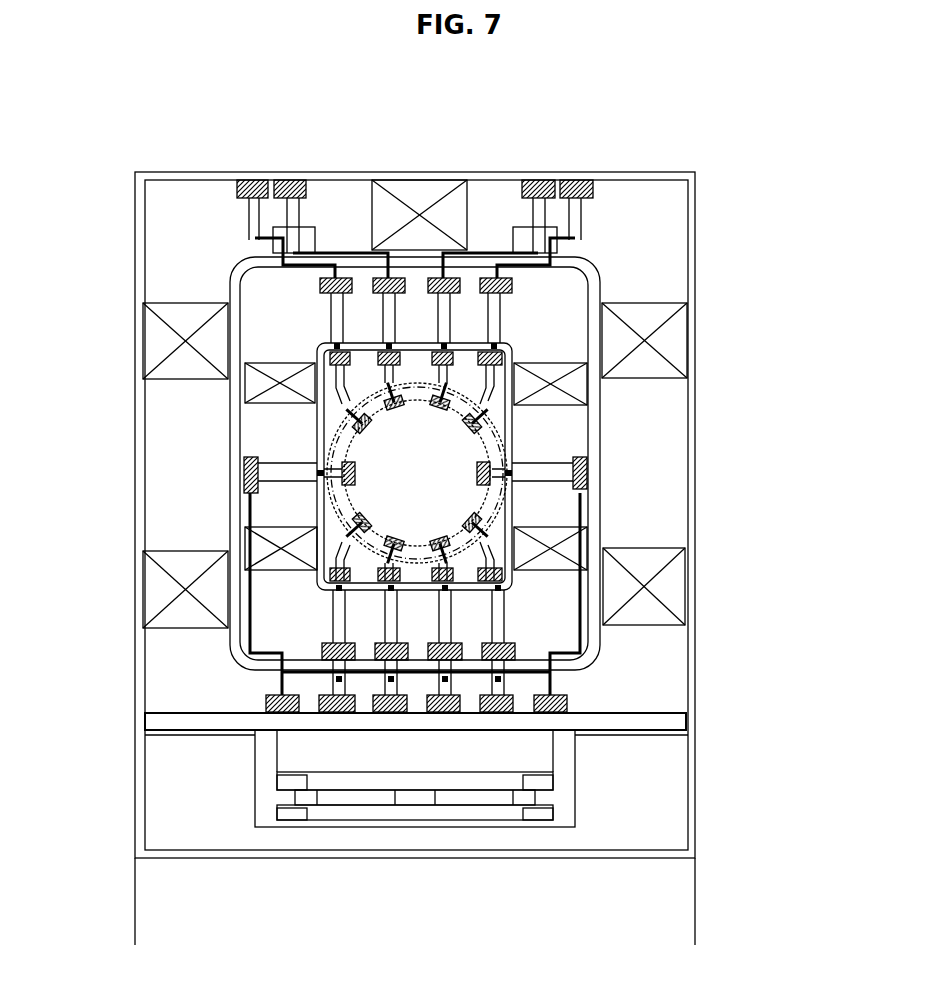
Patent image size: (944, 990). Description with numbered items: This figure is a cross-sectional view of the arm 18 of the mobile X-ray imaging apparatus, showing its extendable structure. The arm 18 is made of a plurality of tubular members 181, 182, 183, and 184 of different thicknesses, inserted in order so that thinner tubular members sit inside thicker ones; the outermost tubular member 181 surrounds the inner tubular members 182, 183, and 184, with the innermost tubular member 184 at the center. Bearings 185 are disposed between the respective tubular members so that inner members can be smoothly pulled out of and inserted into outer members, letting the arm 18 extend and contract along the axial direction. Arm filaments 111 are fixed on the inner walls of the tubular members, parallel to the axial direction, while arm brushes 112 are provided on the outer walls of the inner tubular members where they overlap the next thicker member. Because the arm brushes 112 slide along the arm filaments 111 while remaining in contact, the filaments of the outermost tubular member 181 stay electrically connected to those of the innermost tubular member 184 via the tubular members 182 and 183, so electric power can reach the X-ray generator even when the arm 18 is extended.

The arm 18 is at (824, 159).
The arm filament 111 is at (252, 180).
The arm brush 112 is at (249, 215).
The tubular member 181 is at (648, 172).
The tubular member 182 is at (598, 444).
The tubular member 183 is at (510, 355).
The tubular member 184 is at (494, 432).
The bearing 185 is at (152, 340).